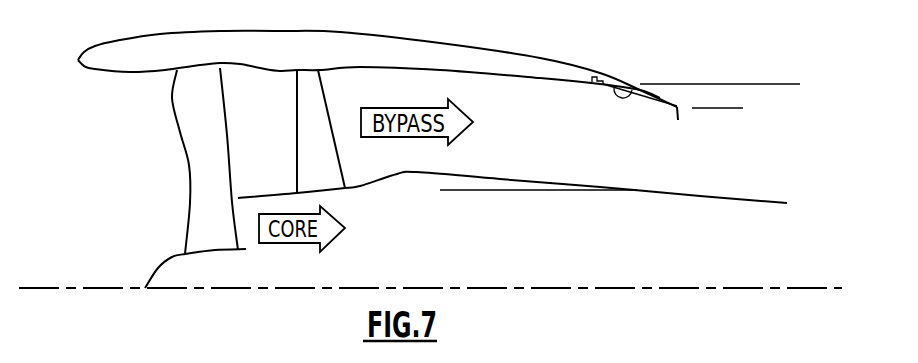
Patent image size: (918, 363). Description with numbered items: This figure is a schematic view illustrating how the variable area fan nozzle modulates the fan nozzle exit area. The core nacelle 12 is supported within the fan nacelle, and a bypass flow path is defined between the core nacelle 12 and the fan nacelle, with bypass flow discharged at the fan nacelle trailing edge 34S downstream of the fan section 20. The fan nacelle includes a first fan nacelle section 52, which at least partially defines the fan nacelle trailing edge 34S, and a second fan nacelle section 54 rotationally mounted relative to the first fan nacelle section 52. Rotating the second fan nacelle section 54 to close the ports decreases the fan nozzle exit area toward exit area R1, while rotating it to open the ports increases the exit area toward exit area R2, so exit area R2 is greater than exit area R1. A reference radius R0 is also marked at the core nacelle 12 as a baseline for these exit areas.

The first fan nacelle section 52 is at (512, 62).
The second fan nacelle section 54 is at (638, 86).
The fan nacelle trailing edge 34S is at (678, 120).
The fan section 20 is at (190, 206).
The core nacelle 12 is at (695, 206).
The core radius R0 is at (453, 200).
The exit area R1 is at (733, 118).
The exit area R2 is at (792, 94).